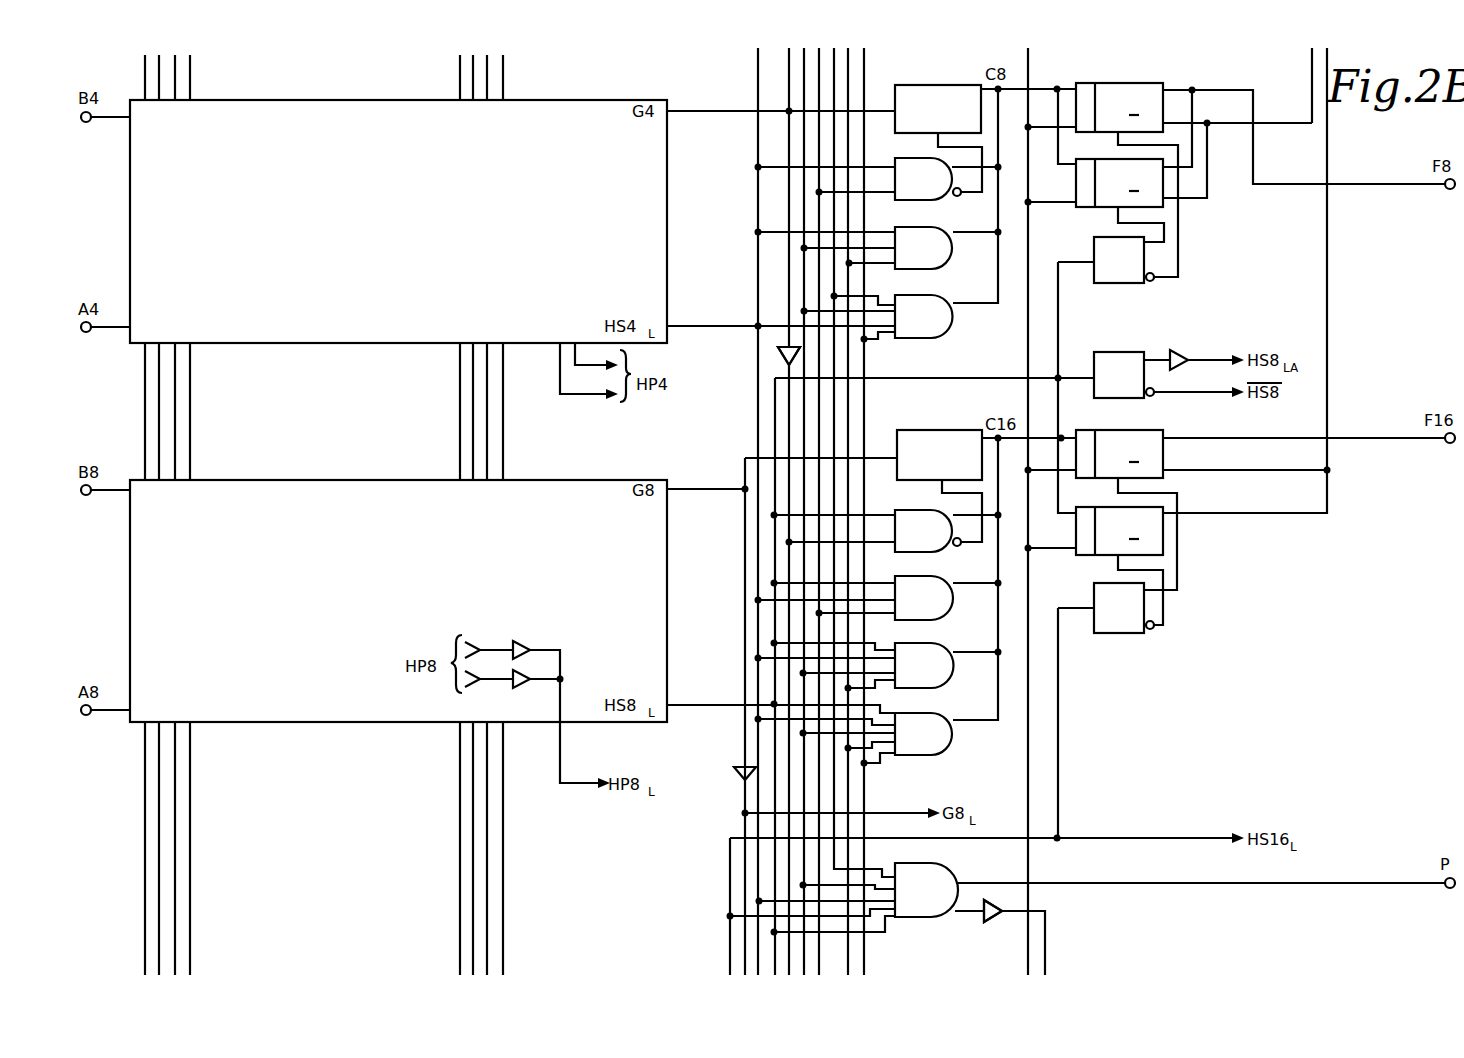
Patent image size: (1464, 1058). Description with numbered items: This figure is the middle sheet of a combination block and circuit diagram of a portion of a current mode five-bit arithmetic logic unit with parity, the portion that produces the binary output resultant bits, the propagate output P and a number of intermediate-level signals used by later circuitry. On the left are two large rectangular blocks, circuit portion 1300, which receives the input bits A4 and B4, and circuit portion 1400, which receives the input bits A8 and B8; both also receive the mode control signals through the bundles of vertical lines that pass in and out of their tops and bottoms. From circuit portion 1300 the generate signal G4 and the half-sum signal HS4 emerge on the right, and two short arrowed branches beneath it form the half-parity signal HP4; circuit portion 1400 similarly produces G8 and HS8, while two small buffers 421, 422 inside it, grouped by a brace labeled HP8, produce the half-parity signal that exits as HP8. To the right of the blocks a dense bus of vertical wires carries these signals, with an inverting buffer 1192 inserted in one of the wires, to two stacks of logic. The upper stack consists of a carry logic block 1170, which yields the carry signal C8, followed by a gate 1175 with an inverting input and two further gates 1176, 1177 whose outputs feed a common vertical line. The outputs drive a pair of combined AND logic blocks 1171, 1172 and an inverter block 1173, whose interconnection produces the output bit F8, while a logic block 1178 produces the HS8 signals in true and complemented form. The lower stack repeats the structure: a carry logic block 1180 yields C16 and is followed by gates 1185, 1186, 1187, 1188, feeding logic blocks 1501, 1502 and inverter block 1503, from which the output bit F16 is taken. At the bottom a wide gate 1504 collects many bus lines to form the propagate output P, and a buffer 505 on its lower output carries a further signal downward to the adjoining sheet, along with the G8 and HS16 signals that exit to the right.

The circuit portion 1300 is at (585, 100).
The circuit portion 1400 is at (585, 480).
The carry logic block 1170 is at (930, 85).
The NAND gate 1175 is at (930, 158).
The AND gate 1176 is at (930, 227).
The AND gate 1177 is at (930, 295).
The logic block 1171 is at (1108, 83).
The logic block 1172 is at (1110, 159).
The inverter block 1173 is at (1110, 237).
The logic block 1178 is at (1112, 352).
The carry logic block 1180 is at (930, 430).
The NAND gate 1185 is at (930, 510).
The AND gate 1186 is at (930, 576).
The AND gate 1187 is at (930, 643).
The AND gate 1188 is at (940, 713).
The logic block 1501 is at (1112, 430).
The logic block 1502 is at (1112, 507).
The inverter block 1503 is at (1112, 583).
The AND gate 1504 is at (925, 883).
The buffer 505 is at (993, 920).
The buffer 421 is at (521, 643).
The buffer 422 is at (521, 686).
The inverting buffer 1192 is at (778, 353).